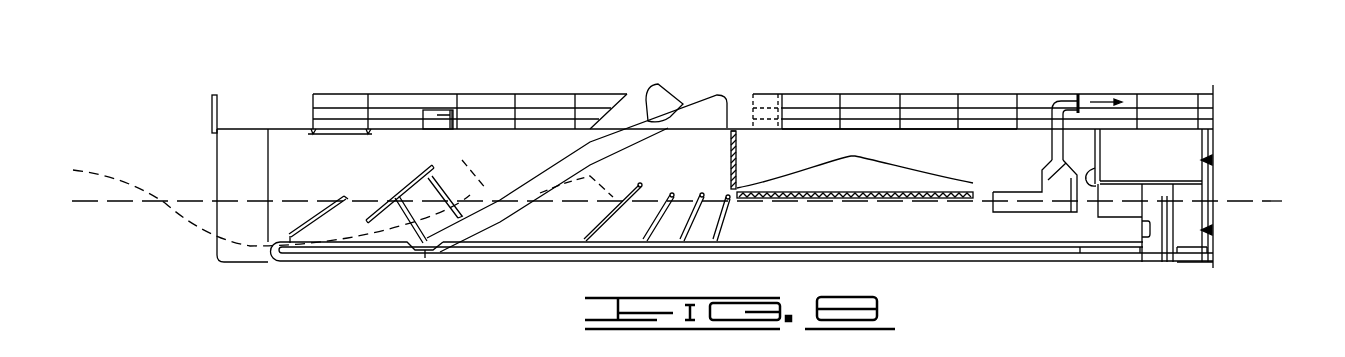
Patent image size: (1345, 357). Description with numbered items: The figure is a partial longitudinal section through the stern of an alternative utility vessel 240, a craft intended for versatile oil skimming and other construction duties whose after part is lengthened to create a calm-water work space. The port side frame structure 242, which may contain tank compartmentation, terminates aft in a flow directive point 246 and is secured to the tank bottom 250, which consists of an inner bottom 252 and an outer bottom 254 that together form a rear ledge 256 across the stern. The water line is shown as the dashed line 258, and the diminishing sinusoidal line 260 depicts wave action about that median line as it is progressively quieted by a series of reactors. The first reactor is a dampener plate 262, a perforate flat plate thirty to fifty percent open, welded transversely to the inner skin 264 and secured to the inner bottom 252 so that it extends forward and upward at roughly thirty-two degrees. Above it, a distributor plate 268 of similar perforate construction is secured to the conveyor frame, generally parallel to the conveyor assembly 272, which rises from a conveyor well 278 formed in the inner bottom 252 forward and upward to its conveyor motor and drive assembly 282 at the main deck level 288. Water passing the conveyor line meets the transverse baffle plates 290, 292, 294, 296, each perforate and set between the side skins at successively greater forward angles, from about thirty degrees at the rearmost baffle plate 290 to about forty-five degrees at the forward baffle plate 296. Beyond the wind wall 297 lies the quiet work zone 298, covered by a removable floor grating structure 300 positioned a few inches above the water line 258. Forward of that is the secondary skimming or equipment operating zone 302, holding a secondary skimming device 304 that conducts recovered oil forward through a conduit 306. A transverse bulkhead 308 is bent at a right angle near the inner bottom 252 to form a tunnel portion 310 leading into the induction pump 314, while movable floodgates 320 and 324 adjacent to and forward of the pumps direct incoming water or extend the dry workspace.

The utility vessel 240 is at (1156, 71).
The port side frame structure 242 is at (393, 137).
The flow directive point 246 is at (212, 128).
The tank bottom 250 is at (540, 245).
The inner bottom 252 is at (913, 246).
The outer bottom 254 is at (979, 262).
The rear ledge 256 is at (262, 252).
The water line 258 is at (147, 205).
The diminishing sinusoidal line 260 is at (120, 167).
The dampener plate 262 is at (322, 212).
The inner skin 264 is at (955, 156).
The distributor plate 268 is at (397, 197).
The conveyor assembly 272 is at (553, 167).
The conveyor well 278 is at (425, 258).
The conveyor motor and drive assembly 282 is at (648, 93).
The main deck level 288 is at (472, 125).
The baffle plate 290 is at (645, 185).
The baffle plate 292 is at (667, 195).
The baffle plate 294 is at (703, 193).
The baffle plate 296 is at (736, 167).
The wind wall 297 is at (737, 143).
The work zone 298 is at (855, 161).
The removable floor grating structure 300 is at (847, 191).
The secondary skimming or equipment operating zone 302 is at (1035, 177).
The secondary skimming device 304 is at (1060, 178).
The conduit 306 is at (1063, 100).
The transverse bulkhead 308 is at (1100, 164).
The tunnel portion 310 is at (1124, 228).
The induction pump 314 is at (1157, 240).
The movable floodgate 320 is at (1210, 142).
The movable floodgate 324 is at (1100, 141).